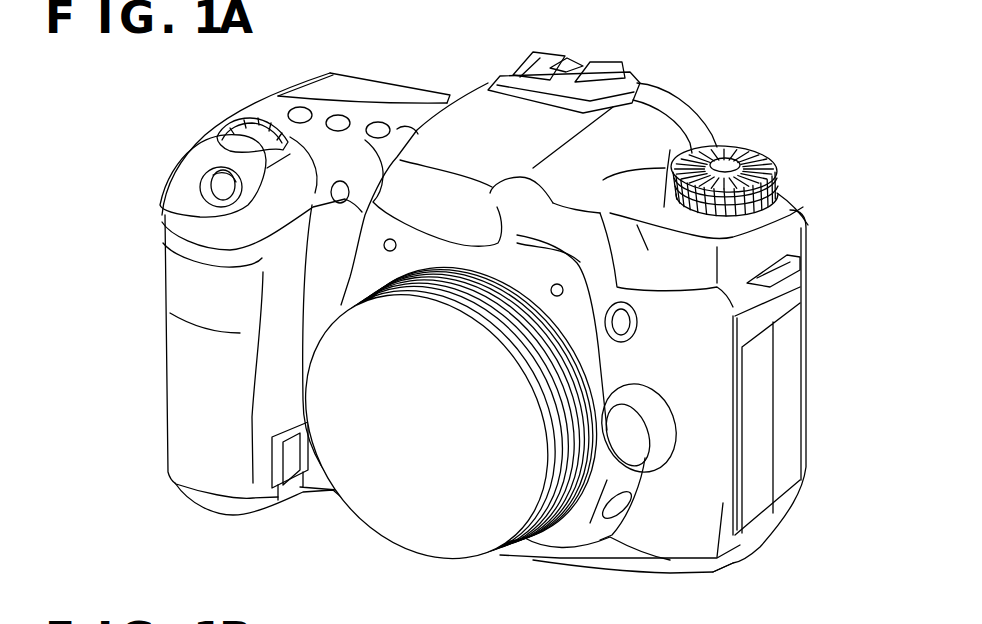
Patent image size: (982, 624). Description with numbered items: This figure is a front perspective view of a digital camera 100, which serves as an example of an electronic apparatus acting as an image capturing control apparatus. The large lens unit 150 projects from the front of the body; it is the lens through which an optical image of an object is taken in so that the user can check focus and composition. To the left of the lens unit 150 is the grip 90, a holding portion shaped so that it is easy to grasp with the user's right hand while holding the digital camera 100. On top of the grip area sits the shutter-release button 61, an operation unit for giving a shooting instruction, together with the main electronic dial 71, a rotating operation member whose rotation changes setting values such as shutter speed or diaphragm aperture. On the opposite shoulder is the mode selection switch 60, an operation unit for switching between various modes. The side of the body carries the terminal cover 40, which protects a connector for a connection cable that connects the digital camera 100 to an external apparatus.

The digital camera 100 is at (775, 80).
The terminal cover 40 is at (760, 398).
The mode selection switch 60 is at (756, 160).
The shutter-release button 61 is at (220, 186).
The main electronic dial 71 is at (243, 126).
The grip 90 is at (193, 397).
The lens unit 150 is at (520, 540).